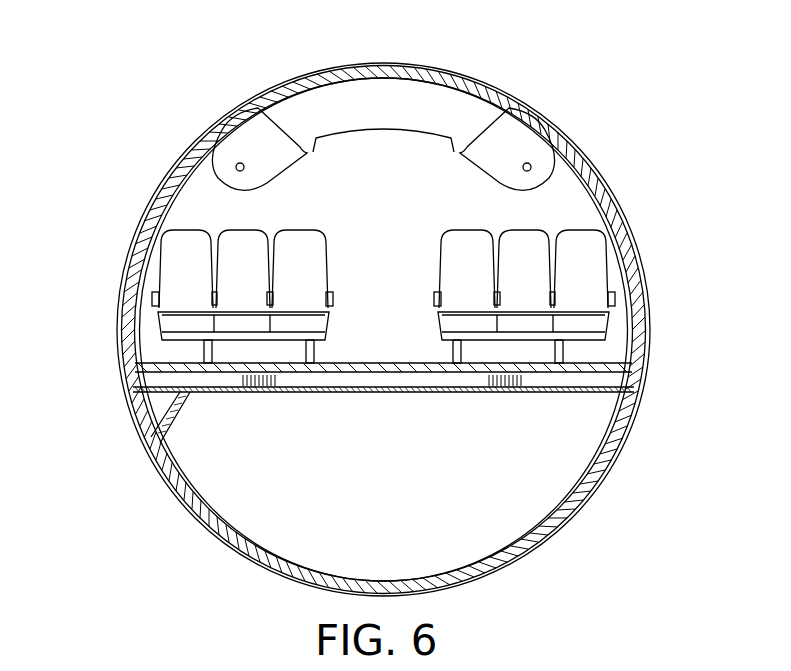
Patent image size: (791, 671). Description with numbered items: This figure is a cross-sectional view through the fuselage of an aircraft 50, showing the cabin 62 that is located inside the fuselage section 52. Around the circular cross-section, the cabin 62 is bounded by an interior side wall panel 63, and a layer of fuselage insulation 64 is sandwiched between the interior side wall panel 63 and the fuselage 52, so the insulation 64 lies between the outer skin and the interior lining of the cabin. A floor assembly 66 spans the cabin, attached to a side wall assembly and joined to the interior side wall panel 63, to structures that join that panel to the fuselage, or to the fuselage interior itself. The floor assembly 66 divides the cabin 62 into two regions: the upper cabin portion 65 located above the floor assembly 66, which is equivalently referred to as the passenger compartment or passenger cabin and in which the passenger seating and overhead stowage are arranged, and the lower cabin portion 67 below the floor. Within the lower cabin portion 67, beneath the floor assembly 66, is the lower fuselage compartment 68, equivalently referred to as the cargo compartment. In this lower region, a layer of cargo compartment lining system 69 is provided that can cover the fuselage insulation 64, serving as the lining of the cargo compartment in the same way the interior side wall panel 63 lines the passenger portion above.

The aircraft 50 is at (405, 300).
The fuselage section 52 is at (577, 143).
The cabin 62 is at (338, 172).
The interior side wall panel 63 is at (173, 168).
The fuselage insulation 64 is at (154, 195).
The upper cabin portion 65 is at (667, 65).
The floor assembly 66 is at (378, 360).
The lower cabin portion 67 is at (100, 370).
The lower fuselage compartment 68 is at (508, 450).
The cargo compartment lining system 69 is at (378, 395).